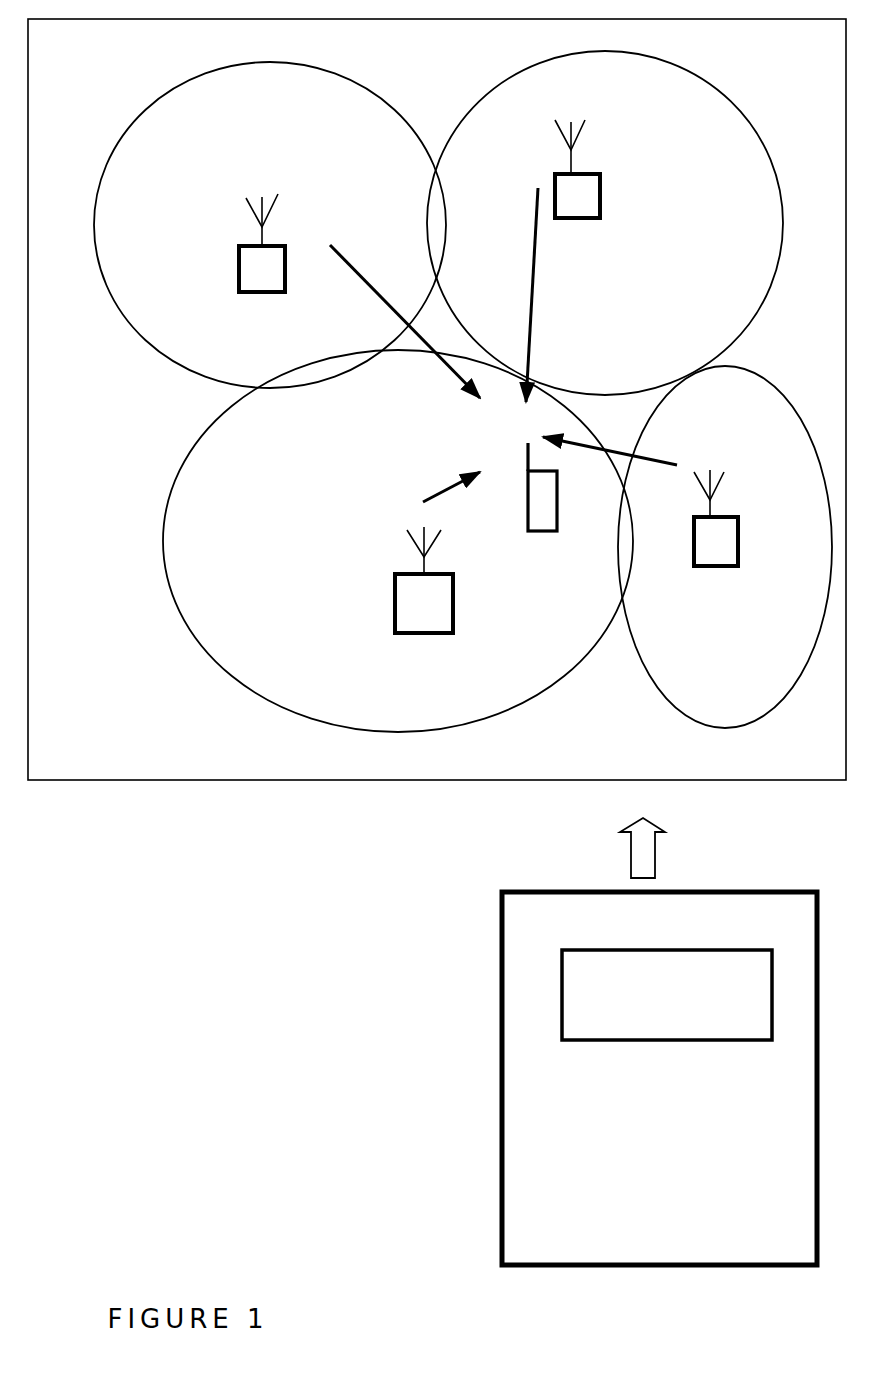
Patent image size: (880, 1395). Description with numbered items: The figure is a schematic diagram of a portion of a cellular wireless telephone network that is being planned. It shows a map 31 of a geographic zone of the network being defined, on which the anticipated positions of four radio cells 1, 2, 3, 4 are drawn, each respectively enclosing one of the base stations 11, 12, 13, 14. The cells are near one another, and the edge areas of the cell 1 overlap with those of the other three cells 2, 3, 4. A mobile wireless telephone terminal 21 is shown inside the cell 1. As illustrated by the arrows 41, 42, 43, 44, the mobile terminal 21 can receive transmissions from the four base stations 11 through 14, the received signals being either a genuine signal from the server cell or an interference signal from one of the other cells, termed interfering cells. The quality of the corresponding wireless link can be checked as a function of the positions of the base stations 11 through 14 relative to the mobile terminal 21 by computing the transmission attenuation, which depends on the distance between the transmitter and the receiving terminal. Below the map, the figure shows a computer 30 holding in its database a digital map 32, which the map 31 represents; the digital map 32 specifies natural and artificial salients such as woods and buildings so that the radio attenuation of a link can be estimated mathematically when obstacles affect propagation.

The radio cell 1 is at (263, 667).
The radio cell 2 is at (258, 141).
The radio cell 3 is at (705, 141).
The radio cell 4 is at (740, 709).
The base station 11 is at (393, 606).
The base station 12 is at (237, 276).
The base station 13 is at (603, 174).
The base station 14 is at (722, 568).
The mobile wireless telephone terminal 21 is at (545, 537).
The computer 30 is at (502, 1272).
The map 31 is at (151, 782).
The digital map 32 is at (560, 965).
The arrow 41 is at (440, 487).
The arrow 42 is at (343, 262).
The arrow 43 is at (540, 258).
The arrow 44 is at (648, 456).